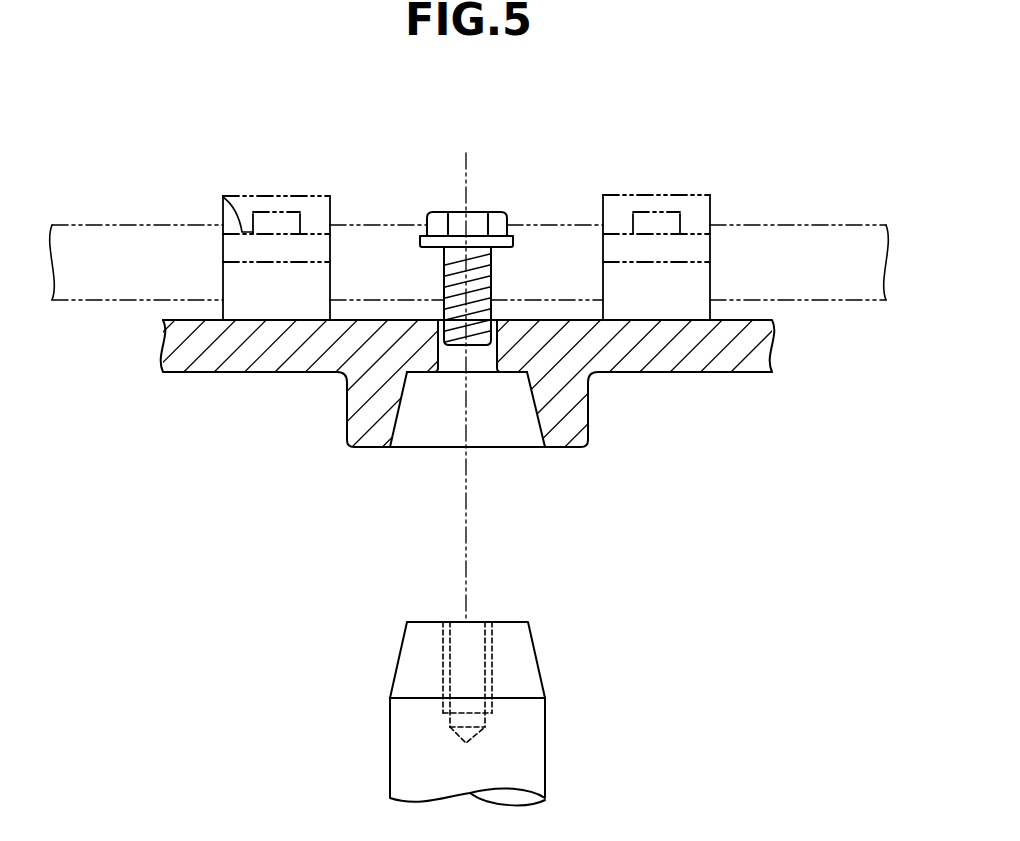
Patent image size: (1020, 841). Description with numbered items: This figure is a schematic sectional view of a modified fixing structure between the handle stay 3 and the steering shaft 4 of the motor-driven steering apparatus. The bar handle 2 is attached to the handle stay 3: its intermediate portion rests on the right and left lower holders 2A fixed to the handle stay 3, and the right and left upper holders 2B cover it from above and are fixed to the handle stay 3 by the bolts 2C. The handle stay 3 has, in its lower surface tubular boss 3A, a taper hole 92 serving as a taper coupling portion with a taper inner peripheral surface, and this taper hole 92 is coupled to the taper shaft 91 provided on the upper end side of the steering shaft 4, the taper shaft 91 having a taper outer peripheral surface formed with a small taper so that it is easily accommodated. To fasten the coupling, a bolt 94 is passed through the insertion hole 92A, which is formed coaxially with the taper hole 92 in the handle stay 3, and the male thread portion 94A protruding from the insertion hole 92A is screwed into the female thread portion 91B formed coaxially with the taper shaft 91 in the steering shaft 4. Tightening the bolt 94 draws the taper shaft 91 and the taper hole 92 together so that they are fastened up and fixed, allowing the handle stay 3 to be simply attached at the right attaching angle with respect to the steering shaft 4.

The bar handle 2 is at (845, 222).
The lower holder 2A is at (223, 280).
The upper holder 2B is at (223, 196).
The bolt 2C is at (280, 211).
The handle stay 3 is at (742, 343).
The lower surface tubular boss 3A is at (588, 423).
The steering shaft 4 is at (527, 750).
The taper shaft 91 is at (398, 665).
The female thread portion 91B is at (484, 636).
The taper hole 92 is at (400, 412).
The insertion hole 92A is at (491, 350).
The bolt 94 is at (497, 218).
The male thread portion 94A is at (491, 278).